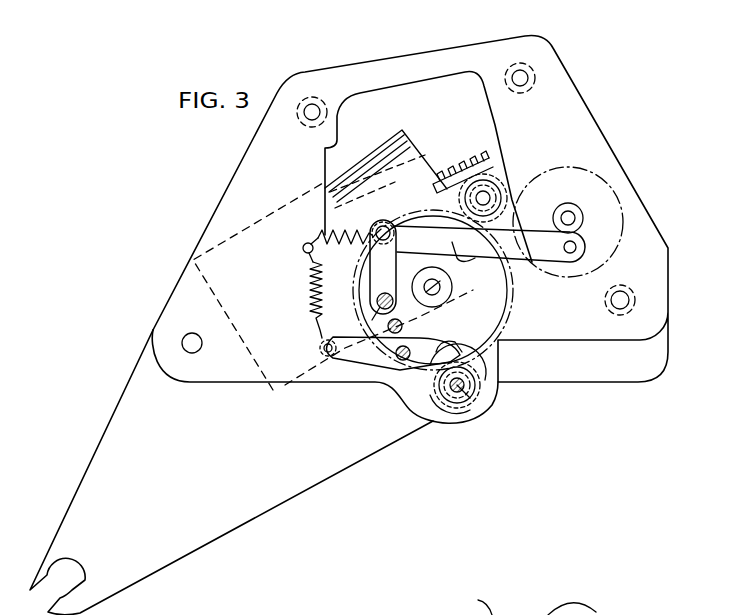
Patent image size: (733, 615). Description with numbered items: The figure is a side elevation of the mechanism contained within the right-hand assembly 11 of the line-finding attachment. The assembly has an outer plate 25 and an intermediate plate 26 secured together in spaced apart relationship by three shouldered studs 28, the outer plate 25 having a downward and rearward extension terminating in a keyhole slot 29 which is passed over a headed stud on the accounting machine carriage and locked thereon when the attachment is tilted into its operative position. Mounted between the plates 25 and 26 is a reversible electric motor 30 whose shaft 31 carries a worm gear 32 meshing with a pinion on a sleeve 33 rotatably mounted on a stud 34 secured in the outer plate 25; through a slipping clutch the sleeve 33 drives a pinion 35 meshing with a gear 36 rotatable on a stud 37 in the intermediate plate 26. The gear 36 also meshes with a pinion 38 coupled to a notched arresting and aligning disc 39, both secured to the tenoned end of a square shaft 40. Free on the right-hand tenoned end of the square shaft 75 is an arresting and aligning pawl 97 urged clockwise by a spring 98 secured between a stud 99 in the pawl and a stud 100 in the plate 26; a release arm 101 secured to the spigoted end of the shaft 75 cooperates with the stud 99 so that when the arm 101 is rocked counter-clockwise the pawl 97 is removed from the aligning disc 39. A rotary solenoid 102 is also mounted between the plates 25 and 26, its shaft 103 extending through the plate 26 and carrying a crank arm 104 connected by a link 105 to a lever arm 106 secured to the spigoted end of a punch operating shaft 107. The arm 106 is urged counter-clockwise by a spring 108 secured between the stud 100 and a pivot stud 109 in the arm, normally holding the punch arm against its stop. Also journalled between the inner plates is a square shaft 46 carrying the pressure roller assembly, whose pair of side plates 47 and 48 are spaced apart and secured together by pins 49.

The right-hand assembly 11 is at (388, 46).
The outer plate 25 is at (275, 490).
The intermediate plate 26 is at (648, 318).
The shouldered studs 28 is at (298, 112).
The keyhole slot 29 is at (86, 580).
The reversible electric motor 30 is at (388, 158).
The shaft 31 is at (440, 187).
The worm gear 32 is at (478, 168).
The sleeve 33 is at (494, 172).
The stud 34 is at (488, 200).
The pinion 35 is at (503, 212).
The gear 36 is at (512, 296).
The stud 37 is at (441, 287).
The pinion 38 is at (480, 368).
The notched arresting and aligning disc 39 is at (445, 408).
The square shaft 40 is at (470, 396).
The square shaft 46 is at (402, 323).
The side plate 47 is at (475, 604).
The side plate 48 is at (573, 590).
The pin 49 is at (580, 614).
The square shaft 75 is at (404, 362).
The arresting and aligning pawl 97 is at (447, 342).
The spring 98 is at (310, 295).
The stud 99 is at (323, 350).
The stud 100 is at (305, 246).
The release arm 101 is at (322, 340).
The rotary solenoid 102 is at (583, 170).
The shaft 103 is at (576, 218).
The crank arm 104 is at (577, 245).
The link 105 is at (457, 258).
The lever arm 106 is at (370, 268).
The punch operating shaft 107 is at (378, 308).
The spring 108 is at (342, 236).
The pivot stud 109 is at (383, 225).